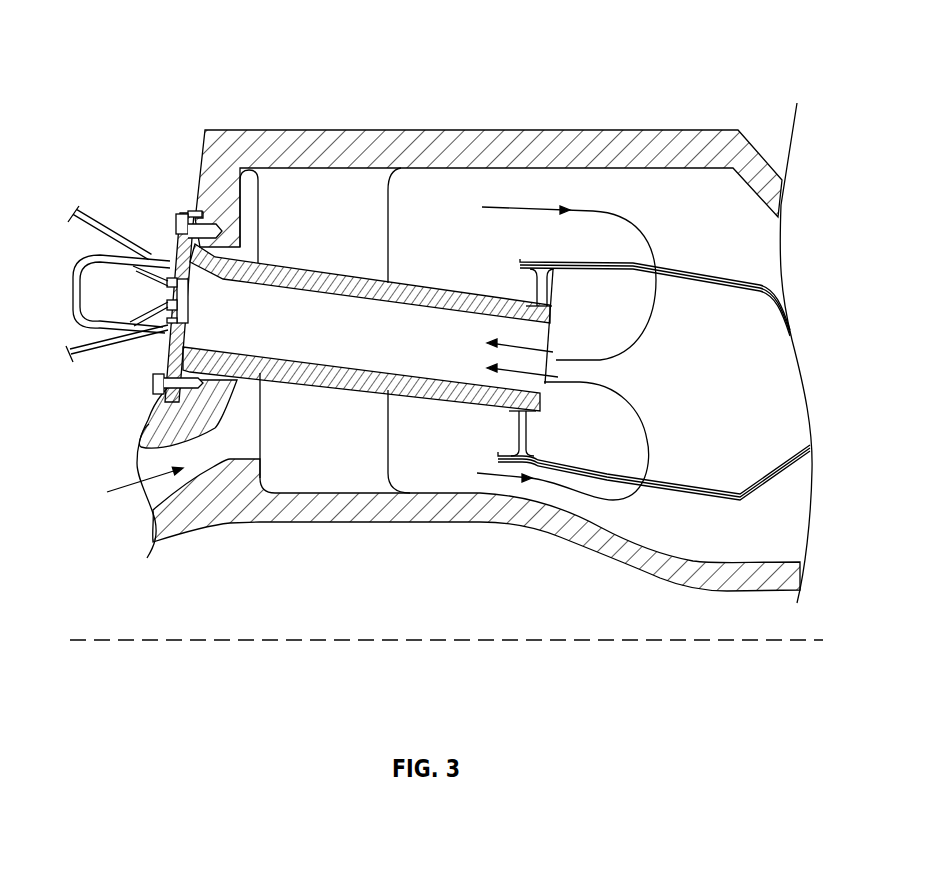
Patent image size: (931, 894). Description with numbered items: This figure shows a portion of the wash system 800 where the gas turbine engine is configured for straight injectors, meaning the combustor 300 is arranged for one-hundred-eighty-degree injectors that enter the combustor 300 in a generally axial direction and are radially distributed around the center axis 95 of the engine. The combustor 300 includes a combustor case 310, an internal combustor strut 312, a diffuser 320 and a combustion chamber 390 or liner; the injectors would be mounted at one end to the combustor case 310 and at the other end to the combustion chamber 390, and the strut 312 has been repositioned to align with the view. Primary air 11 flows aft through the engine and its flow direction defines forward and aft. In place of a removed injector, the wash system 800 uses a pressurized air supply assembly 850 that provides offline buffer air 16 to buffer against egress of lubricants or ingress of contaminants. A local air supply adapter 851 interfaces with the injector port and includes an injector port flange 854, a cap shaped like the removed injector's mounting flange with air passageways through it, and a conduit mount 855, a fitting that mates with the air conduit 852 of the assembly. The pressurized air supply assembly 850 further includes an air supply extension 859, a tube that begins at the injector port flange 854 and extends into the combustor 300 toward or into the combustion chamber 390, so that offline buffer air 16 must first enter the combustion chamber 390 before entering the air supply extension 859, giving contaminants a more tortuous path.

The combustor 300 is at (183, 45).
The combustor case 310 is at (322, 128).
The internal combustor strut 312 is at (390, 203).
The diffuser 320 is at (252, 438).
The combustion chamber 390 is at (650, 246).
The offline buffer air 16 is at (648, 330).
The air supply extension 859 is at (445, 295).
The pressurized air supply assembly 850 is at (118, 108).
The local air supply adapter 851 is at (175, 246).
The air conduit 852 is at (95, 205).
The injector port flange 854 is at (188, 210).
The conduit mount 855 is at (168, 304).
The wash system 800 is at (75, 433).
The primary air 11 is at (128, 485).
The center axis 95 is at (130, 640).